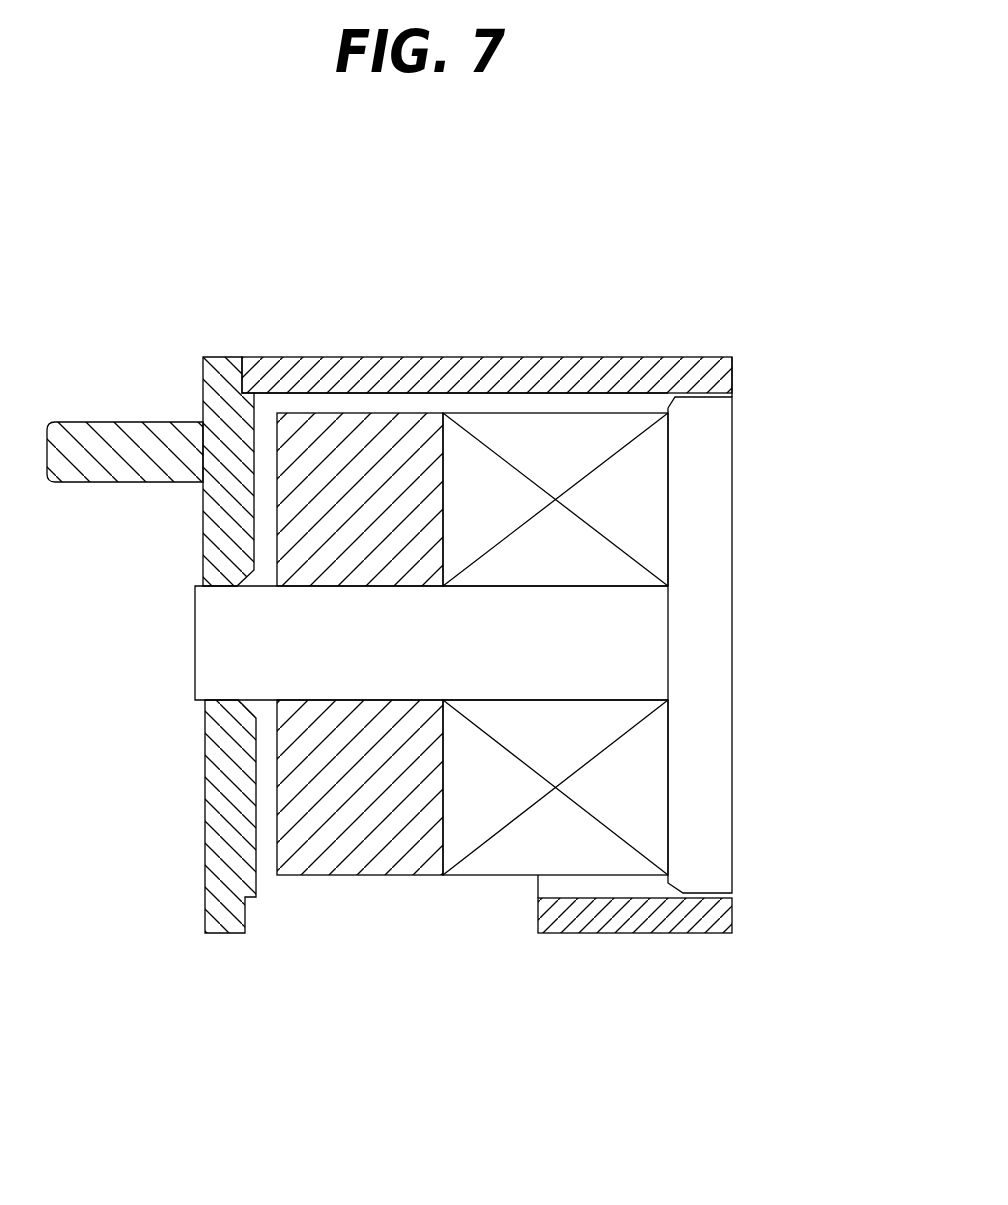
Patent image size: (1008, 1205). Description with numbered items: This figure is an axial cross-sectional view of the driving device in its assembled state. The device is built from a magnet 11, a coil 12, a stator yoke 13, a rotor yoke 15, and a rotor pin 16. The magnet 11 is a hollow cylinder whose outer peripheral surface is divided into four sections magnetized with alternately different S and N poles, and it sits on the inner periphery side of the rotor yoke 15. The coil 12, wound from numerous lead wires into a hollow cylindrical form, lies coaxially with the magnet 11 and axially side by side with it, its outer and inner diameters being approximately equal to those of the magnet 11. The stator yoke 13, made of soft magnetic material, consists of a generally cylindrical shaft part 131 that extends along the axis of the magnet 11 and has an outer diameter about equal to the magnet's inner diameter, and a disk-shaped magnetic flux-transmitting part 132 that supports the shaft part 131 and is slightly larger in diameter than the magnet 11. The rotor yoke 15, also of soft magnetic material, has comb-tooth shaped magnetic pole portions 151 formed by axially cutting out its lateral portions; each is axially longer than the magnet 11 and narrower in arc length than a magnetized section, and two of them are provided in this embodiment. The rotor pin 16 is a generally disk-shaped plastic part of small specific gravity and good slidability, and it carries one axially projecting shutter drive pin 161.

The magnet 11 is at (373, 855).
The coil 12 is at (498, 858).
The stator yoke 13 is at (770, 562).
The shaft part 131 is at (523, 607).
The magnetic flux-transmitting part 132 is at (702, 433).
The rotor yoke 15 is at (683, 933).
The magnetic pole portions 151 is at (393, 357).
The rotor pin 16 is at (238, 862).
The shutter drive pin 161 is at (92, 443).